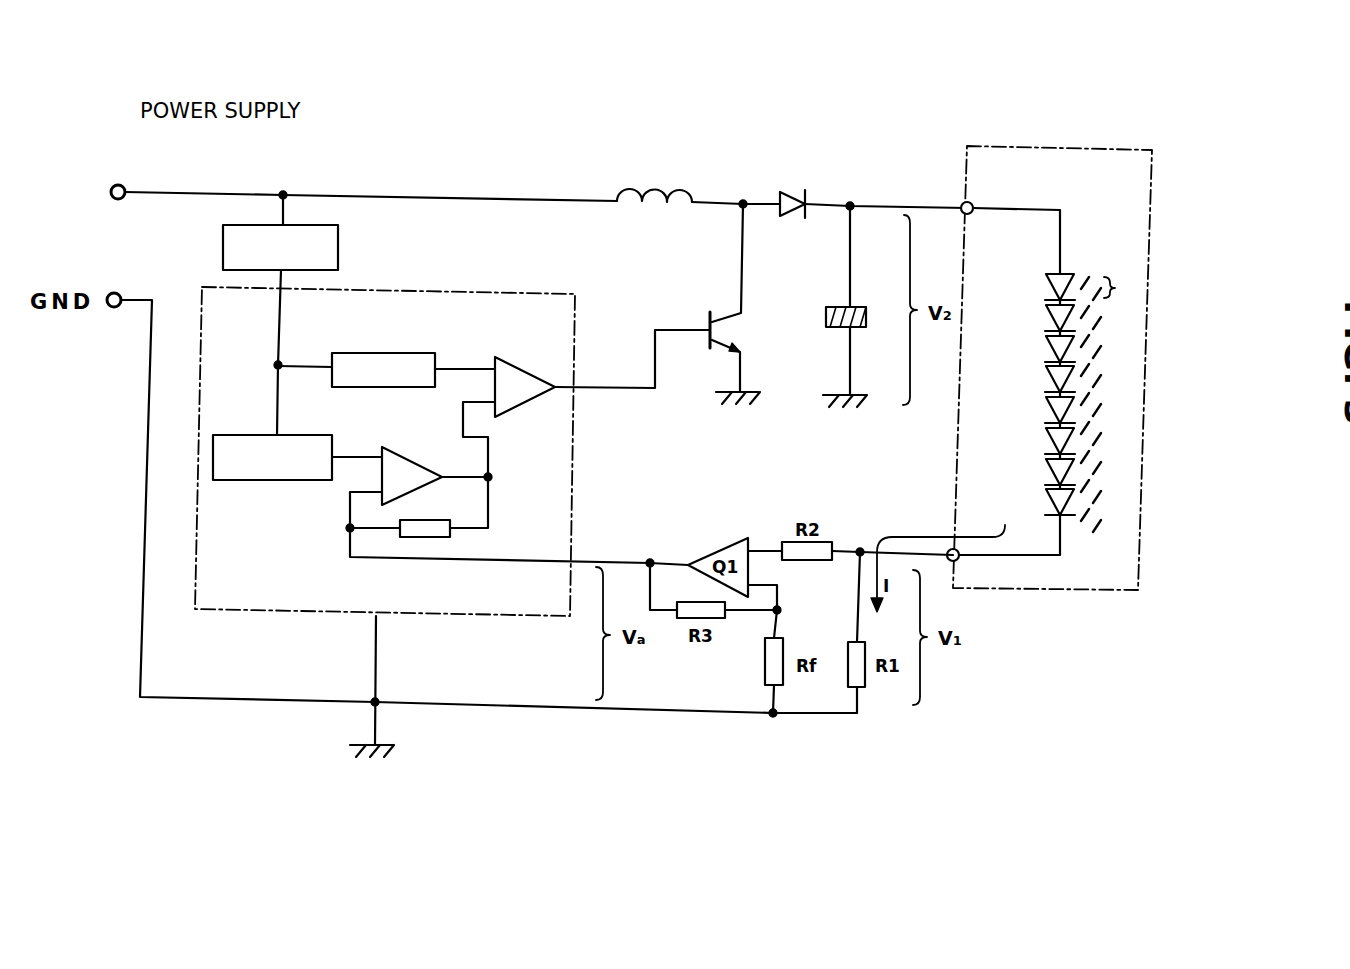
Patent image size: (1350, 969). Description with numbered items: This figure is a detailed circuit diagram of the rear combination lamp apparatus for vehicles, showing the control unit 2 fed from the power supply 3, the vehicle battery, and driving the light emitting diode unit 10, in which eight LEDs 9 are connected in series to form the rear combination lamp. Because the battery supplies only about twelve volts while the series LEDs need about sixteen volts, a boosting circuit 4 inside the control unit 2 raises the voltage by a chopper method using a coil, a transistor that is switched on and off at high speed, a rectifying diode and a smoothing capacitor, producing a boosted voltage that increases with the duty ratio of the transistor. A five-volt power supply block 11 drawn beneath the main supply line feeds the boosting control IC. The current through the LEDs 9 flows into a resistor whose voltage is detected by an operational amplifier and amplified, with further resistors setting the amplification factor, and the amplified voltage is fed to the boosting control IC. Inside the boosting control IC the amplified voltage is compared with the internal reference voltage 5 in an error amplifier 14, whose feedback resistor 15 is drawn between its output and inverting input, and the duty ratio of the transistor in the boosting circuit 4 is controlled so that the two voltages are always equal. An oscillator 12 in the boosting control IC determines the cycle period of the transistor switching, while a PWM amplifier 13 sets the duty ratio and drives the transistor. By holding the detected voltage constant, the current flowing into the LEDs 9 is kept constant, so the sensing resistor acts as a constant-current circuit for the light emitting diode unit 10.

The control unit 2 is at (422, 158).
The power supply 3 is at (121, 183).
The boosting circuit 4 is at (877, 176).
The reference voltage 5 is at (263, 480).
The LEDs 9 is at (1046, 318).
The light emitting diode unit 10 is at (1006, 144).
The 5 V power supply 11 is at (338, 245).
The oscillator 12 is at (425, 353).
The PWM amplifier 13 is at (512, 357).
The error amplifier 14 is at (413, 467).
The feedback resistor 15 is at (432, 538).